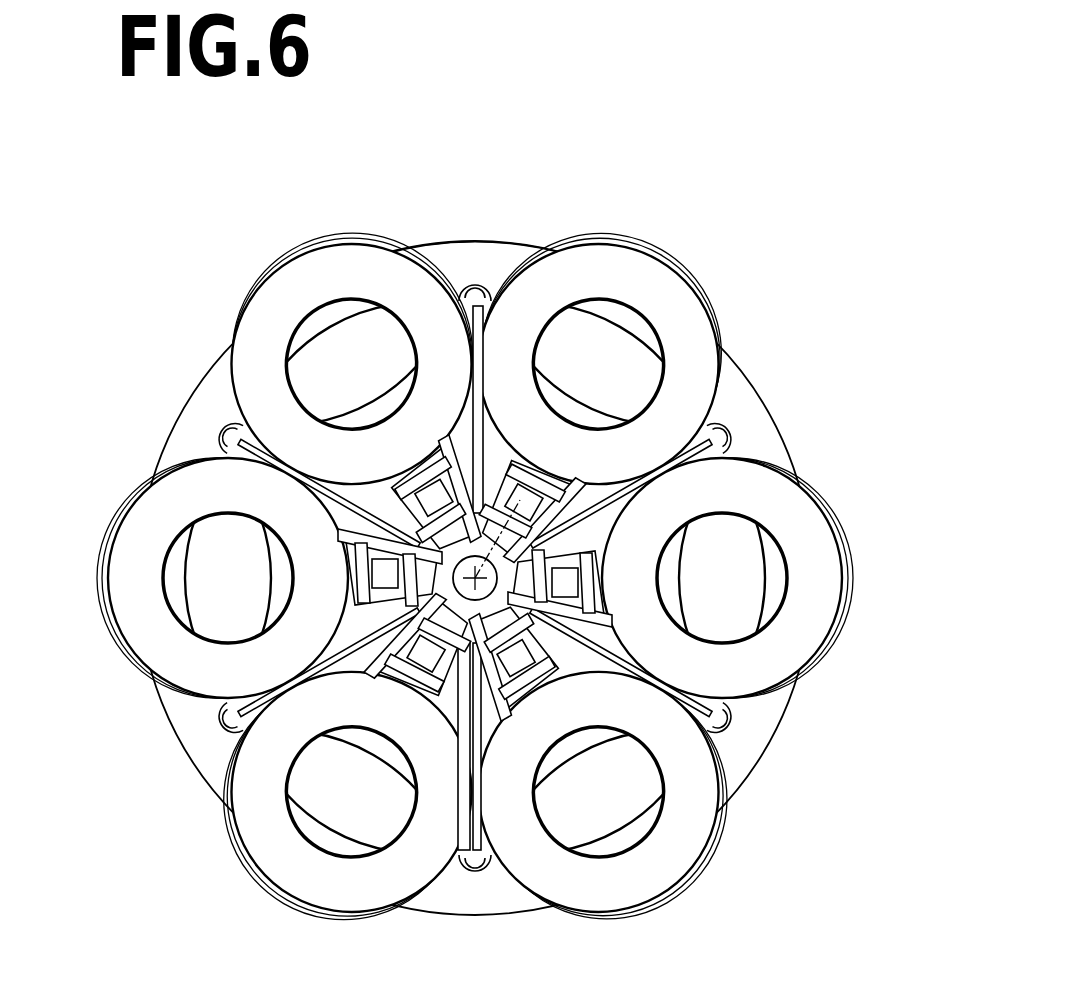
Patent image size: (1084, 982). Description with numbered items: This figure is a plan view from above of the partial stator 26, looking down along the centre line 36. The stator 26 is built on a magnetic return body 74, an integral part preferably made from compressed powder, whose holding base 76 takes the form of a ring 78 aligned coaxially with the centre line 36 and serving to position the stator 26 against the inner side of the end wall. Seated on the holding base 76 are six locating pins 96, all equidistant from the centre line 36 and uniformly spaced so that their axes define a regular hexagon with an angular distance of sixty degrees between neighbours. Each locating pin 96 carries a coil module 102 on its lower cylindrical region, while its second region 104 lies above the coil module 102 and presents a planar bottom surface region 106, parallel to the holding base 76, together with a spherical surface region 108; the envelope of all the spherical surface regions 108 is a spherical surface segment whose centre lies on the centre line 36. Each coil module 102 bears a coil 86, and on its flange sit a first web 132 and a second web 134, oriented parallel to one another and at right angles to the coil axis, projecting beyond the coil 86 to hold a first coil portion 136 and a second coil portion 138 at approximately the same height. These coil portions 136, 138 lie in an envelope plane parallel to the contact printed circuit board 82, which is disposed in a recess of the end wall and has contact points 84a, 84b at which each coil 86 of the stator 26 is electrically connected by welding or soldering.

The stator 26 is at (834, 331).
The centre line 36 is at (600, 500).
The magnetic return body 74 is at (816, 748).
The holding base 76 is at (762, 745).
The ring 78 is at (478, 242).
The contact printed circuit board 82 is at (367, 510).
The contact point 84a is at (447, 716).
The contact point 84b is at (480, 725).
The coil 86 is at (232, 815).
The locating pin 96 is at (628, 798).
The coil module 102 is at (148, 680).
The second region 104 is at (614, 333).
The bottom surface region 106 is at (675, 593).
The spherical surface region 108 is at (740, 558).
The first web 132 is at (460, 690).
The second web 134 is at (370, 628).
The first coil portion 136 is at (393, 673).
The second coil portion 138 is at (540, 672).